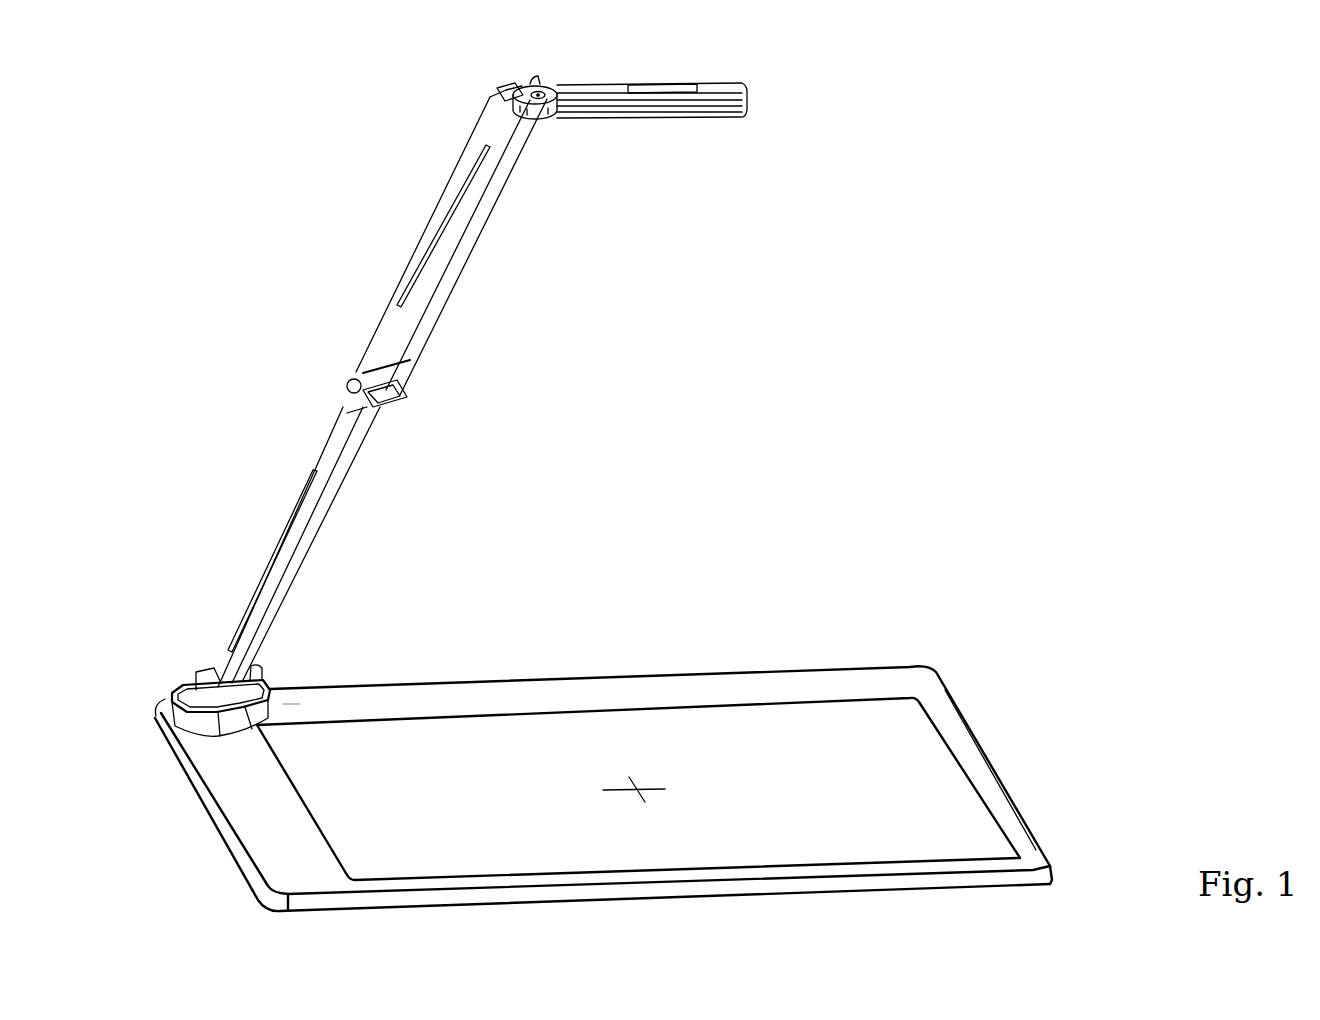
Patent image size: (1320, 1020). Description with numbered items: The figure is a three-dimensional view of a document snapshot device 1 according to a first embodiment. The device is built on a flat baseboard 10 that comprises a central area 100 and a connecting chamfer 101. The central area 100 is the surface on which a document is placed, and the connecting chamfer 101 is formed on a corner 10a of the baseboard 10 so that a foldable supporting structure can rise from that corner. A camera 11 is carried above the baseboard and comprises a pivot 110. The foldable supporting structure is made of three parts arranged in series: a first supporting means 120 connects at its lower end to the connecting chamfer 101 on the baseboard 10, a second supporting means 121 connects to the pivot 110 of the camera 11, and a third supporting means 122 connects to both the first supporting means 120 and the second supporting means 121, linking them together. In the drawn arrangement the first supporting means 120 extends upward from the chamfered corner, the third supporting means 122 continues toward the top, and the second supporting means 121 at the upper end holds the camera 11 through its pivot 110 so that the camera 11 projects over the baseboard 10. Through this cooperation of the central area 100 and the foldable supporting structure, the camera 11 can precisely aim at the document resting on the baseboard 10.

The document snapshot device 1 is at (988, 113).
The baseboard 10 is at (773, 668).
The corner of the baseboard 10a is at (283, 706).
The central area 100 is at (893, 767).
The connecting chamfer 101 is at (176, 699).
The camera 11 is at (660, 85).
The pivot 110 is at (532, 122).
The first supporting means 120 is at (279, 543).
The second supporting means 121 is at (526, 85).
The third supporting means 122 is at (432, 223).